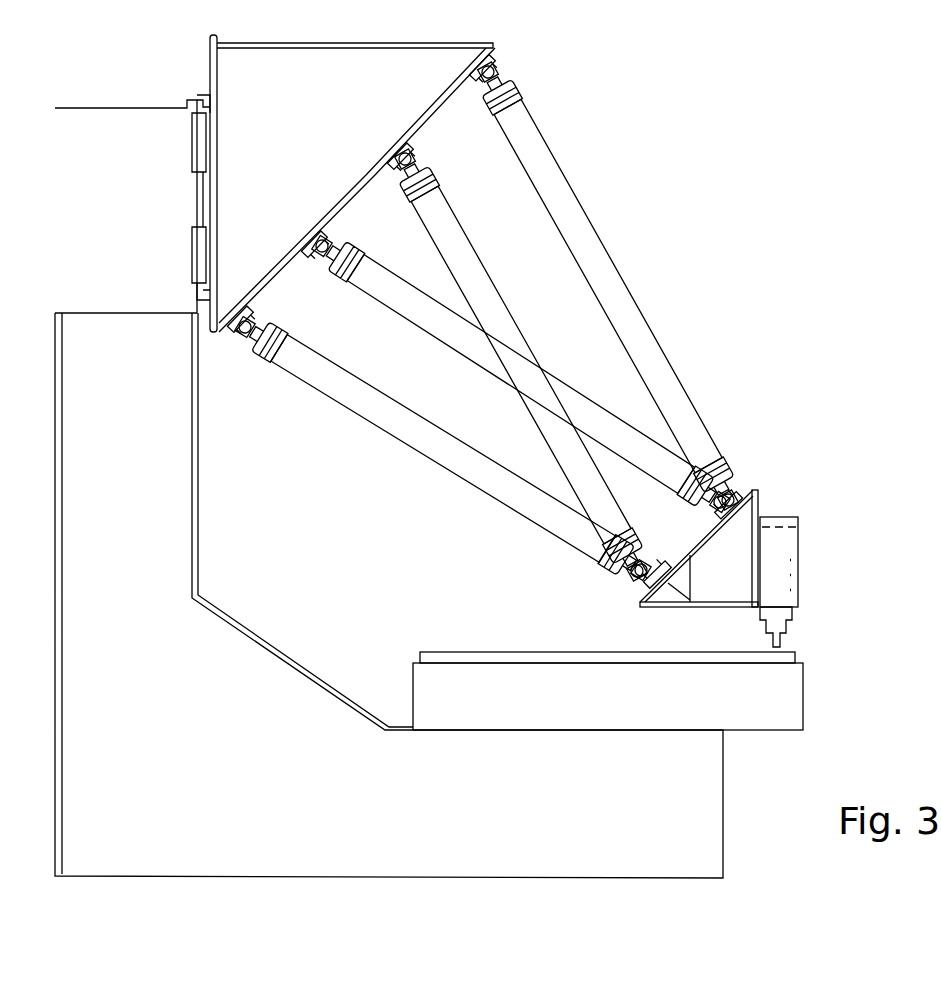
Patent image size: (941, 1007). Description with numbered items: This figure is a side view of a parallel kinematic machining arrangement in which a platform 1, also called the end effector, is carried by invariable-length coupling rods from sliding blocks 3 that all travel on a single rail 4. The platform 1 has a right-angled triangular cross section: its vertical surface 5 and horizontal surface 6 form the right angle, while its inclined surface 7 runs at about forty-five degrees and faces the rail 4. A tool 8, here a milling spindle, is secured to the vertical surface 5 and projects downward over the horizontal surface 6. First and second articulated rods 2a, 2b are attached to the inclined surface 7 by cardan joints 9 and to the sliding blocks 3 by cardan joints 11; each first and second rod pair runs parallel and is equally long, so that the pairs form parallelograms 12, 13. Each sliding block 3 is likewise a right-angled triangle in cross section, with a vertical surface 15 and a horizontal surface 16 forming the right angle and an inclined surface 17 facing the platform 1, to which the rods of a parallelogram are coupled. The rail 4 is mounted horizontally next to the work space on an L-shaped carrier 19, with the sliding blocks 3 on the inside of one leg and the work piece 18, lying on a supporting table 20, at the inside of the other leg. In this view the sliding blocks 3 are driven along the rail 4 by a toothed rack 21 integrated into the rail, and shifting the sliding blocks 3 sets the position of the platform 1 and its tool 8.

The platform 1 is at (726, 519).
The first articulated rod 2a is at (572, 200).
The second articulated rod 2b is at (497, 302).
The sliding block 3 is at (384, 168).
The rail 4 is at (132, 167).
The vertical surface 5 is at (760, 513).
The horizontal surface 6 is at (710, 610).
The inclined surface 7 is at (693, 543).
The tool 8 is at (773, 547).
The cardan joint 9 is at (760, 497).
The cardan joint 11 is at (507, 73).
The parallelogram 12 is at (347, 390).
The parallelogram 13 is at (445, 218).
The vertical surface of sliding block 15 is at (205, 66).
The horizontal surface of sliding block 16 is at (315, 42).
The inclined surface of sliding block 17 is at (428, 122).
The work piece 18 is at (473, 650).
The L-shaped carrier 19 is at (217, 794).
The supporting table 20 is at (640, 716).
The toothed rack 21 is at (203, 92).